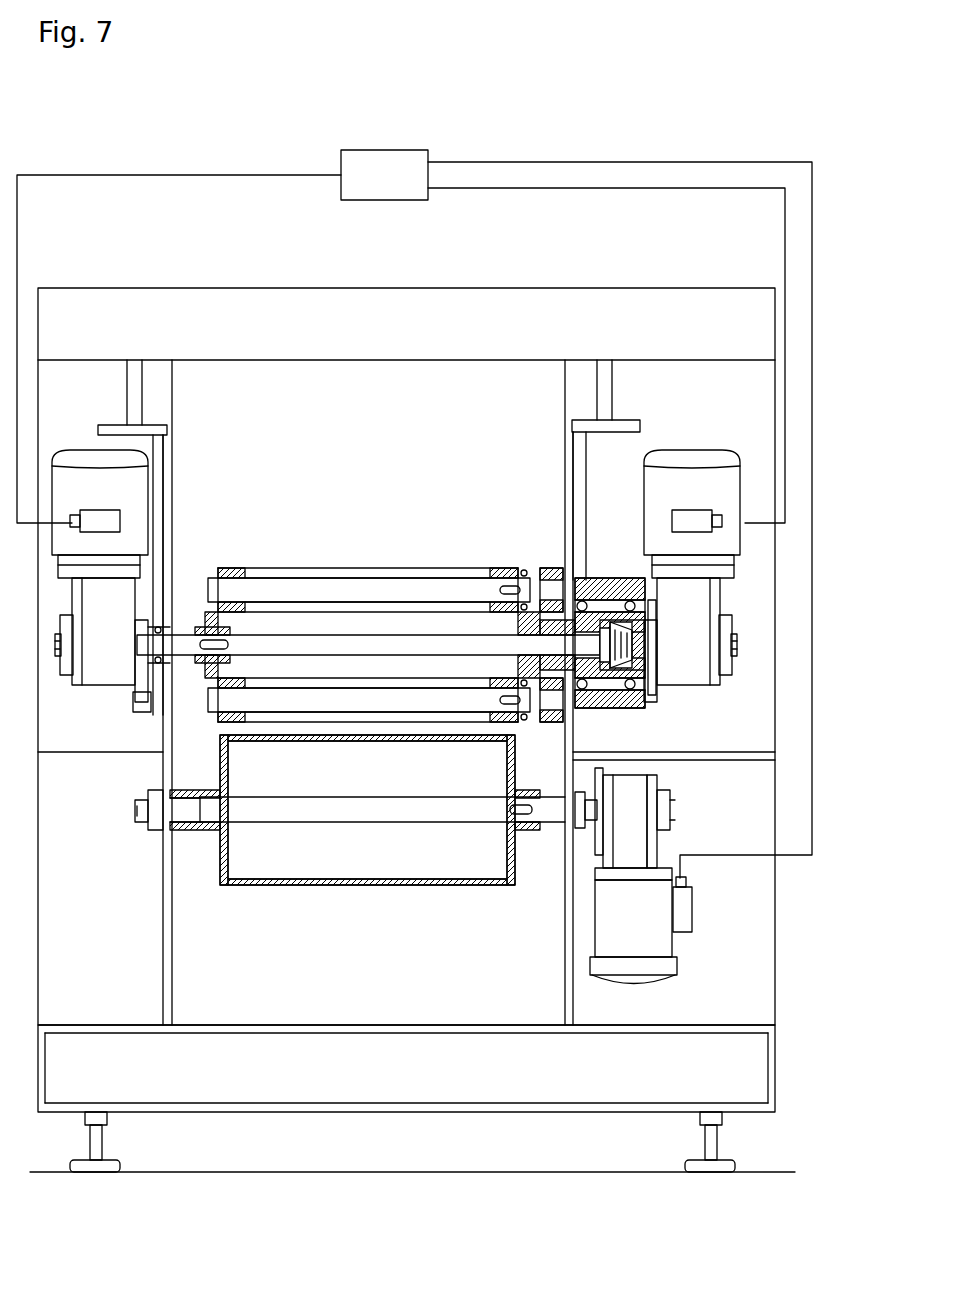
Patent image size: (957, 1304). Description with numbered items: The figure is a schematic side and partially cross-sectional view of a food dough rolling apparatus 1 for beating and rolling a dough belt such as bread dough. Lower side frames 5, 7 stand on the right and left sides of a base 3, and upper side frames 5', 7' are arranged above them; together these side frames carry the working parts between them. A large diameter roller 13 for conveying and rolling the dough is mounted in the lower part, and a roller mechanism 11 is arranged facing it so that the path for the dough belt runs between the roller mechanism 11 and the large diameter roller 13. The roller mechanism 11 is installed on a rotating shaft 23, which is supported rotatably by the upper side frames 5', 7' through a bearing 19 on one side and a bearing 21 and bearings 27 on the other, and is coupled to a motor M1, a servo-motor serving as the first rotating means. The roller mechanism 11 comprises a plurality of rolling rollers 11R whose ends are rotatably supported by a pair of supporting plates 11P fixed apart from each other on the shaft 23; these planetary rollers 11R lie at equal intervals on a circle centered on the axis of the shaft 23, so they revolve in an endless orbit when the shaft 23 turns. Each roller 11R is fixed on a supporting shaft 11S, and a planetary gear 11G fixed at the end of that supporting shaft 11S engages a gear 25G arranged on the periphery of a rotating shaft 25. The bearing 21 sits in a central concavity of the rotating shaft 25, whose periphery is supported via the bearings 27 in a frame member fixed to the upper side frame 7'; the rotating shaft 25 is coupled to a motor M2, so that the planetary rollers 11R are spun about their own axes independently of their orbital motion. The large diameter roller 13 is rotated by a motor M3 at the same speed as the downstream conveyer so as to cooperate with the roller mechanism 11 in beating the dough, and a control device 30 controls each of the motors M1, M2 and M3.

The substrate processing apparatus 1 is at (528, 283).
The base 3 is at (387, 1080).
The lower side frame 5 is at (155, 801).
The upper side frame 5' is at (184, 575).
The lower side frame 7 is at (548, 801).
The upper side frame 7' is at (606, 500).
The roller mechanism 11 is at (243, 563).
The rolling roller 11R is at (385, 568).
The supporting shaft 11S is at (425, 590).
The supporting plate 11P is at (212, 617).
The planetary gear 11G is at (552, 568).
The large diameter roller 13 is at (385, 885).
The bearing 19 is at (170, 662).
The bearing 21 is at (600, 667).
The rotating shaft 23 is at (370, 640).
The rotating shaft 25 is at (635, 640).
The gear 25G is at (572, 585).
The bearing 27 is at (580, 690).
The control device 30 is at (414, 514).
The motor M1 is at (93, 497).
The motor M2 is at (697, 493).
The motor M3 is at (665, 942).